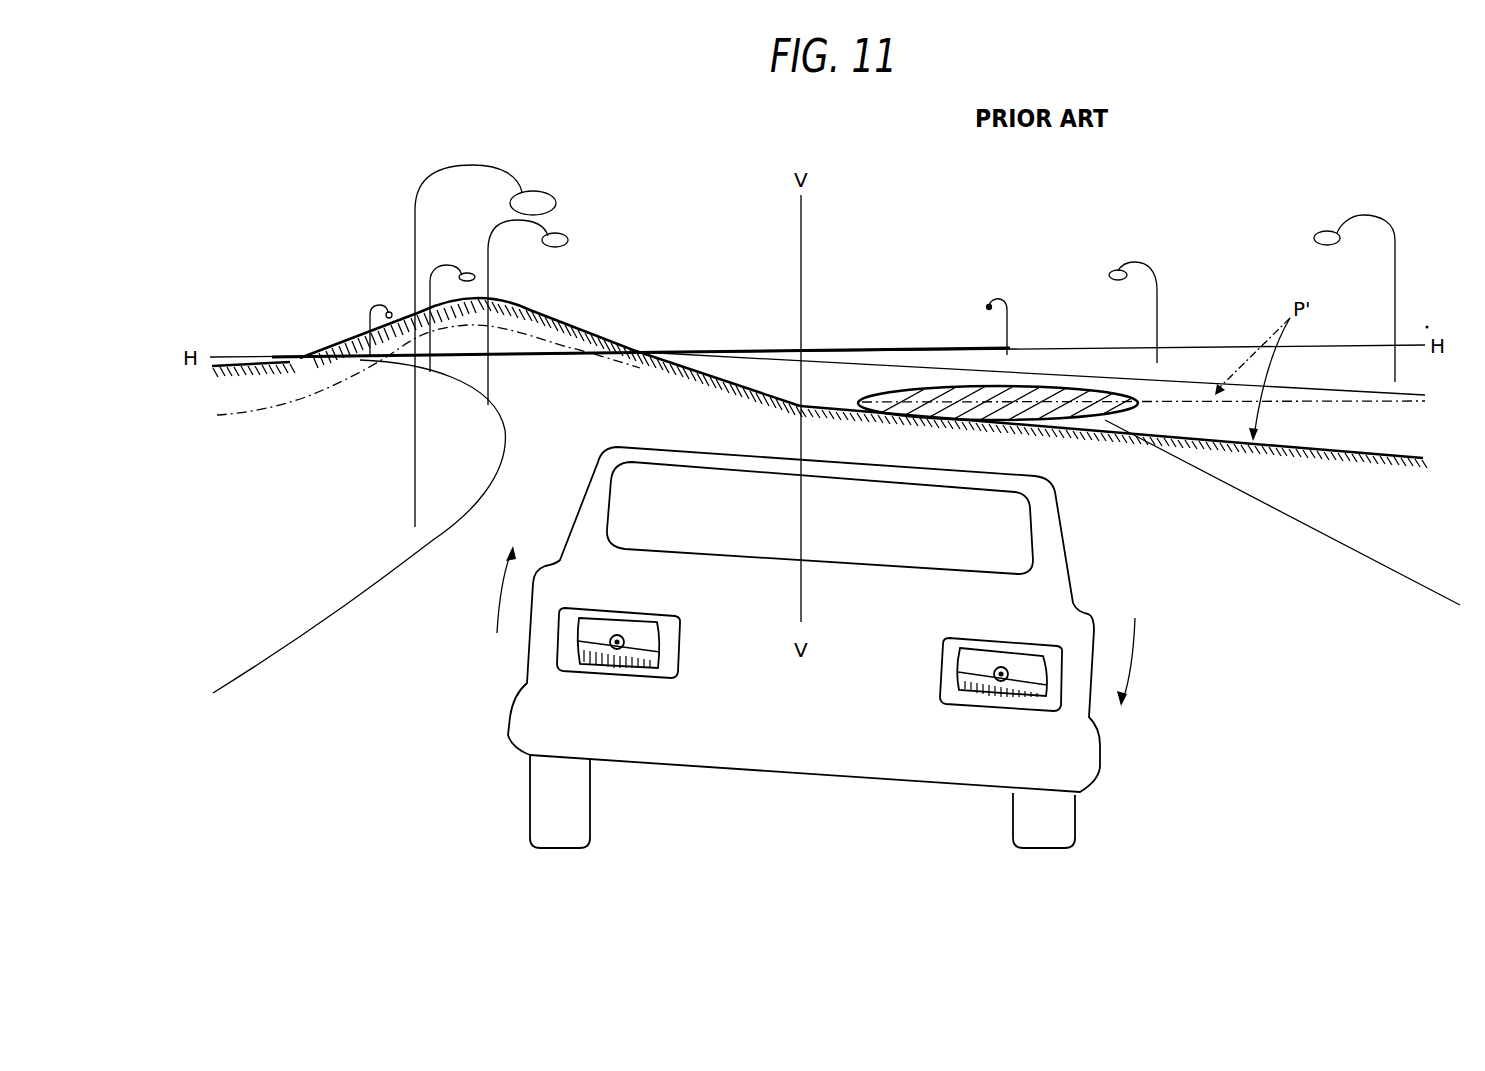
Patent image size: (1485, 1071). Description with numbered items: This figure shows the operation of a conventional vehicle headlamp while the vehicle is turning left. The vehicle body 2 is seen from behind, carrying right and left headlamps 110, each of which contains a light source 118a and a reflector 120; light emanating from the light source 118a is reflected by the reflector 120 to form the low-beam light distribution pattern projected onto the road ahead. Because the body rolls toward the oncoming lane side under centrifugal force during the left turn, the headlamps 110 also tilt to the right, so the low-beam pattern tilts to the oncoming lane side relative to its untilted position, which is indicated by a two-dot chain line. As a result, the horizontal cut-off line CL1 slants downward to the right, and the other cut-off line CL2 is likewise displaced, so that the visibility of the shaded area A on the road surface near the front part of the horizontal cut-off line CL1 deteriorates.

The vehicle 2 is at (1070, 516).
The headlamp 110 is at (660, 601).
The light source 118a is at (616, 636).
The reflector 120 is at (660, 648).
The shaded area A is at (960, 392).
The horizontal cut-off line CL1 is at (1020, 420).
The cut-off line CL2 is at (700, 368).